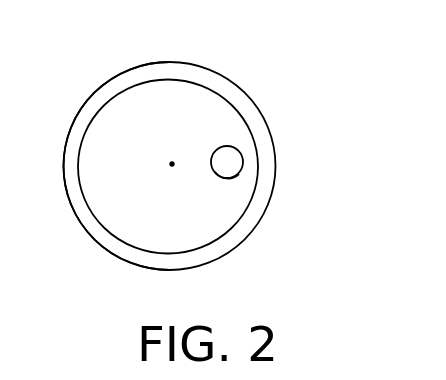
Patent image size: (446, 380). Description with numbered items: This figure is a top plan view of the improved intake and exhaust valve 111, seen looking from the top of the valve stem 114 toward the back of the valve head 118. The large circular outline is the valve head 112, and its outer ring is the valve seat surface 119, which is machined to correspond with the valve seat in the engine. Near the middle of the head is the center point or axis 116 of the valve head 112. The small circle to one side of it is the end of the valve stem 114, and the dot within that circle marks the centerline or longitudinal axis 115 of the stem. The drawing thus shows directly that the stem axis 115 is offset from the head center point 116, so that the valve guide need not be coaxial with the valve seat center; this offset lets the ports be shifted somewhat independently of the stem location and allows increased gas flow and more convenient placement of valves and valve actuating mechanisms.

The intake and exhaust valve 111 is at (217, 220).
The valve head 112 is at (169, 97).
The valve stem 114 is at (239, 175).
The centerline or longitudinal axis 115 is at (228, 162).
The center point or axis 116 is at (172, 164).
The back of the valve head 118 is at (130, 225).
The valve seat surface 119 is at (107, 92).